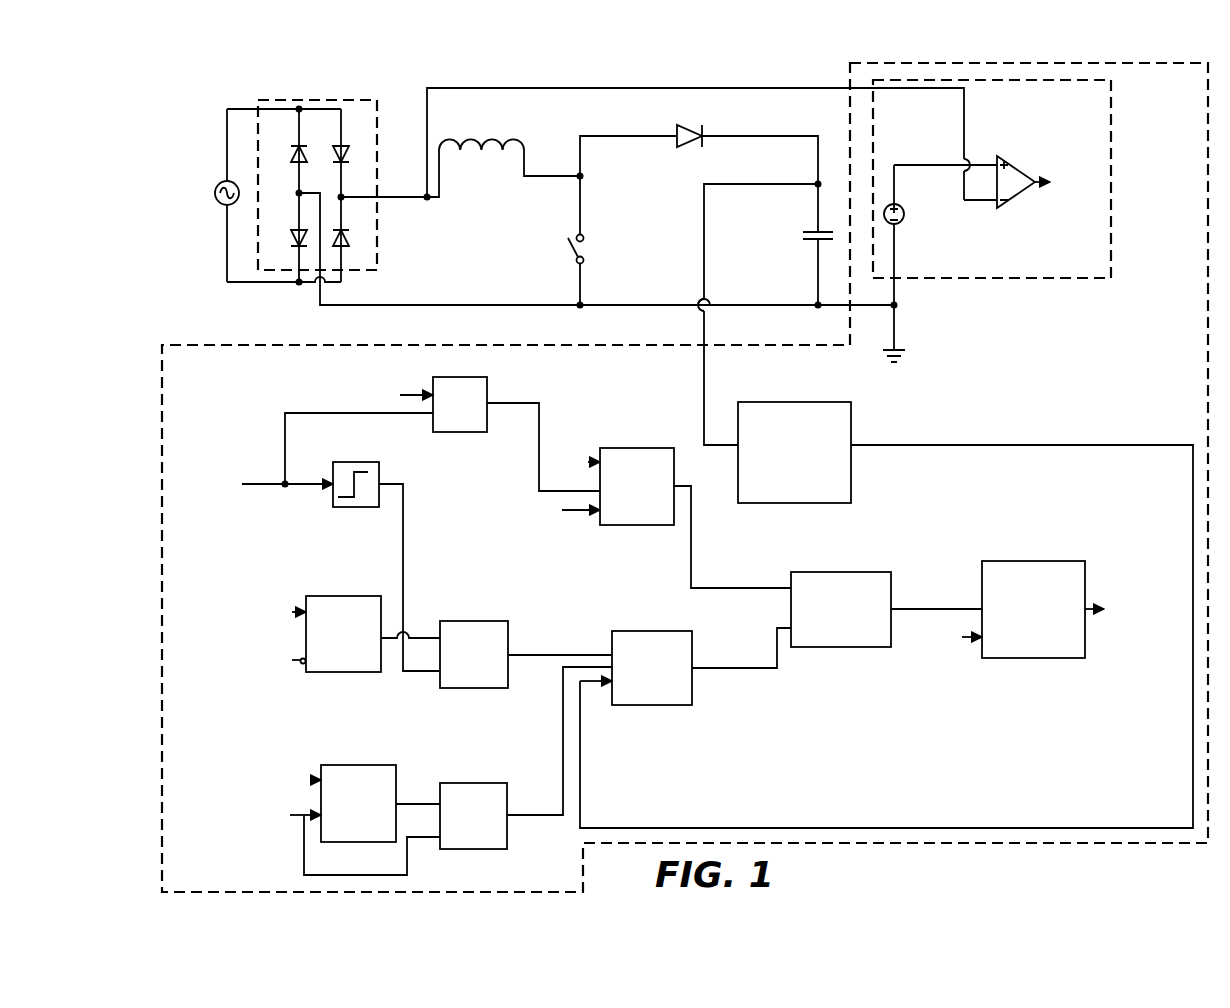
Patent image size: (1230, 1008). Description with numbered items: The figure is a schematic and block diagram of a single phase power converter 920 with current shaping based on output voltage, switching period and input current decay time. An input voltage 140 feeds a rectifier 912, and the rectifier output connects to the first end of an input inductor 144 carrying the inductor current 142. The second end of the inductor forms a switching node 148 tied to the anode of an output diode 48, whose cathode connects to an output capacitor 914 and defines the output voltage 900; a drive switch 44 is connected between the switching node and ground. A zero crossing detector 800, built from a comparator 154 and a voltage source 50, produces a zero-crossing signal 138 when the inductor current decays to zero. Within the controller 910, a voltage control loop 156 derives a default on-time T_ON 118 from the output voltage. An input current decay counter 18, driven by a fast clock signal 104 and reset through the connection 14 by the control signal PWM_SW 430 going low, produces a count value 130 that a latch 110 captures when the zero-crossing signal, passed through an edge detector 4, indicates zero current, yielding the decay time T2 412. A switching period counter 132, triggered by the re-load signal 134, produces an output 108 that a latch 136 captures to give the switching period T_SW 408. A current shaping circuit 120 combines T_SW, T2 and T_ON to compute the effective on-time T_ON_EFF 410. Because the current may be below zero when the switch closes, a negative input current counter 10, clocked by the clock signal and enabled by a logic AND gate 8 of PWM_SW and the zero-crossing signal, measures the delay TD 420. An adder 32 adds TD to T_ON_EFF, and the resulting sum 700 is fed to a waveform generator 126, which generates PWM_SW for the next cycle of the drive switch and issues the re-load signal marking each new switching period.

The power converter 920 is at (207, 118).
The input voltage 140 is at (214, 193).
The rectifier 912 is at (320, 100).
The inductor current 142 is at (427, 203).
The input inductor 144 is at (468, 138).
The switching node 148 is at (586, 176).
The output diode 48 is at (690, 127).
The output voltage 900 is at (780, 133).
The output capacitor 914 is at (810, 228).
The drive switch 44 is at (568, 245).
The zero crossing detector 800 is at (958, 278).
The comparator 154 is at (1018, 168).
The voltage source 50 is at (906, 214).
The zero-crossing signal 138 is at (1072, 202).
The controller 910 is at (1025, 845).
The drive switch control signal PWM_SW 430 is at (312, 395).
The logic AND gate 8 is at (490, 397).
The edge detector 4 is at (356, 508).
The negative input current counter 10 is at (640, 448).
The clock signal 104 is at (571, 446).
The re-load signal 134 is at (520, 499).
The voltage control loop 156 is at (783, 402).
The on-time T_ON 118 is at (888, 828).
The input current decay counter 18 is at (306, 596).
The counter reset input 14 is at (320, 673).
The count value 130 is at (413, 636).
The latch 110 is at (480, 621).
The input current decay time T2 412 is at (540, 623).
The current shaping circuit 120 is at (652, 631).
The delay TD 420 is at (690, 580).
The effective on-time T_ON_EFF 410 is at (777, 628).
The adder 32 is at (847, 572).
The sum 700 is at (913, 608).
The waveform generator 126 is at (1034, 561).
The switching period counter 132 is at (391, 765).
The output of switching period counter 108 is at (407, 800).
The latch 136 is at (470, 783).
The switching period T_SW 408 is at (528, 792).